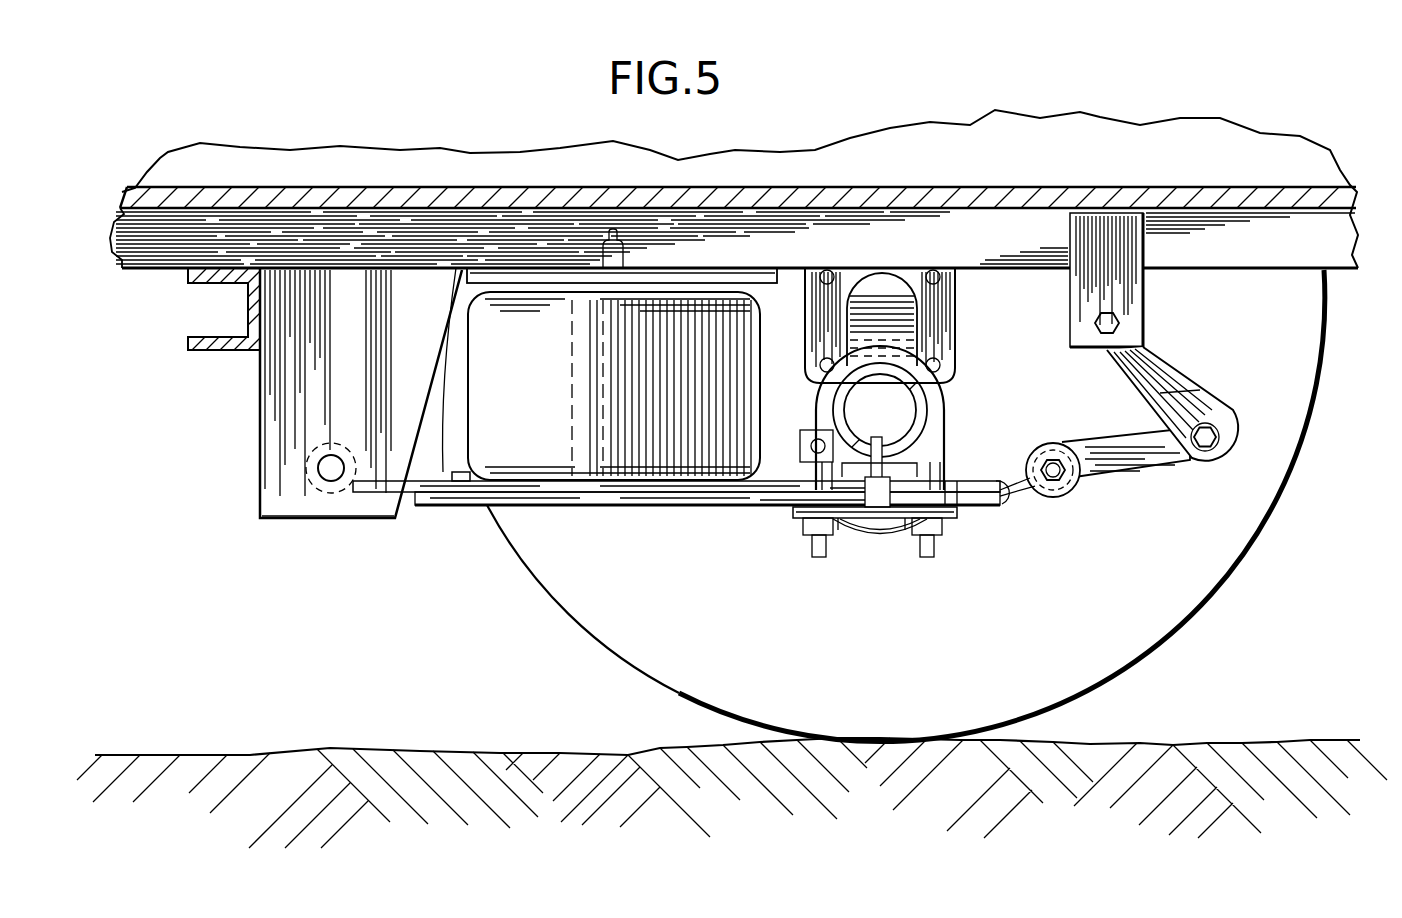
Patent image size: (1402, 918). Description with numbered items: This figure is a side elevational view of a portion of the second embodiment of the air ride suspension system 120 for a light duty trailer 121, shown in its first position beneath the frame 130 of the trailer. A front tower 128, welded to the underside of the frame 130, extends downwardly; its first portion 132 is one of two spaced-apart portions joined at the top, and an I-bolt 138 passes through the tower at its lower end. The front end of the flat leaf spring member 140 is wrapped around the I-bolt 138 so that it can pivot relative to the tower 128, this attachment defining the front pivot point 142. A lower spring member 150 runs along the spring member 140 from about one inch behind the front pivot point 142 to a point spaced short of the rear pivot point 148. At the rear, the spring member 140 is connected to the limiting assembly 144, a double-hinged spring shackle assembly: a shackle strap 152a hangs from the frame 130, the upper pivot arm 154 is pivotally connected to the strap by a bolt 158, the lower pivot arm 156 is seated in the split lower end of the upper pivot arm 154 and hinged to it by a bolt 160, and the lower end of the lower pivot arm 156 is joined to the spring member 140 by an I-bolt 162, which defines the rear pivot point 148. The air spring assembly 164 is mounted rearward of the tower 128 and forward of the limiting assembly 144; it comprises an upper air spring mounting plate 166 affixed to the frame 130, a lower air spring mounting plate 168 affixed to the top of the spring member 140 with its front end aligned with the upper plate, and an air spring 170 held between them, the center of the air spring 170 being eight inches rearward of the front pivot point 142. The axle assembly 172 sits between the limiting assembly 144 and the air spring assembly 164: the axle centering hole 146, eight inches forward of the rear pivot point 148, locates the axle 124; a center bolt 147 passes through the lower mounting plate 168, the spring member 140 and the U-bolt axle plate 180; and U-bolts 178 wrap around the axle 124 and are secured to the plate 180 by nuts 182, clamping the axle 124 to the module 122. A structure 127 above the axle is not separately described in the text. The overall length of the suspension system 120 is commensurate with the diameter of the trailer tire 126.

The air ride suspension system 120 is at (1042, 630).
The light duty trailer 121 is at (1080, 151).
The module 122 is at (368, 585).
The axle 124 is at (965, 507).
The wheel 126 is at (1198, 583).
The bearing mount bracket 127 is at (843, 292).
The tower 128 is at (308, 416).
The frame 130 is at (125, 236).
The first portion of tower 132 is at (280, 497).
The I-bolt 138 is at (330, 470).
The spring member 140 is at (400, 497).
The front pivot point 142 is at (342, 480).
The limiting assembly 144 is at (1240, 404).
The axle centering hole 146 is at (870, 530).
The center bolt 147 is at (877, 436).
The rear pivot point 148 is at (1070, 480).
The lower spring member 150 is at (602, 512).
The shackle strap 152a is at (1125, 289).
The upper pivot arm 154 is at (1180, 387).
The lower pivot arm 156 is at (1128, 452).
The bolt 158 is at (1095, 327).
The bolt 160 is at (1235, 452).
The I-bolt 162 is at (1042, 484).
The air spring assembly 164 is at (553, 530).
The upper air spring mounting plate 166 is at (688, 280).
The lower air spring mounting plate 168 is at (454, 478).
The air spring 170 is at (738, 357).
The axle assembly 172 is at (811, 566).
The U-bolts 178 is at (940, 418).
The U-bolt axle plate 180 is at (914, 524).
The nuts 182 is at (815, 527).